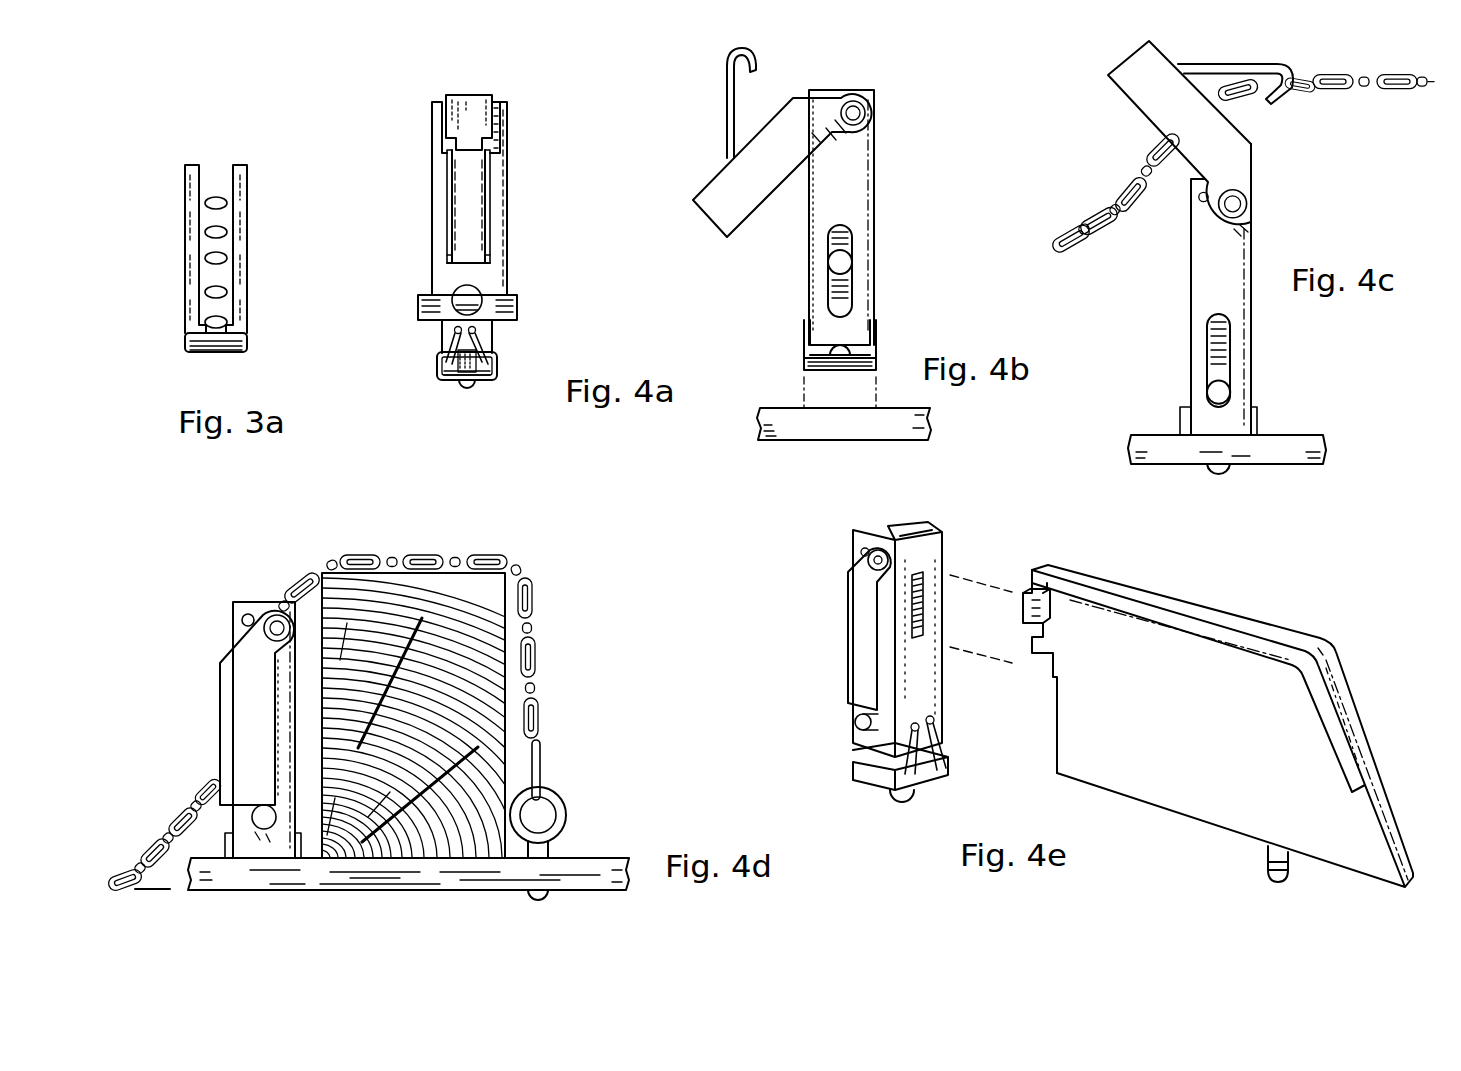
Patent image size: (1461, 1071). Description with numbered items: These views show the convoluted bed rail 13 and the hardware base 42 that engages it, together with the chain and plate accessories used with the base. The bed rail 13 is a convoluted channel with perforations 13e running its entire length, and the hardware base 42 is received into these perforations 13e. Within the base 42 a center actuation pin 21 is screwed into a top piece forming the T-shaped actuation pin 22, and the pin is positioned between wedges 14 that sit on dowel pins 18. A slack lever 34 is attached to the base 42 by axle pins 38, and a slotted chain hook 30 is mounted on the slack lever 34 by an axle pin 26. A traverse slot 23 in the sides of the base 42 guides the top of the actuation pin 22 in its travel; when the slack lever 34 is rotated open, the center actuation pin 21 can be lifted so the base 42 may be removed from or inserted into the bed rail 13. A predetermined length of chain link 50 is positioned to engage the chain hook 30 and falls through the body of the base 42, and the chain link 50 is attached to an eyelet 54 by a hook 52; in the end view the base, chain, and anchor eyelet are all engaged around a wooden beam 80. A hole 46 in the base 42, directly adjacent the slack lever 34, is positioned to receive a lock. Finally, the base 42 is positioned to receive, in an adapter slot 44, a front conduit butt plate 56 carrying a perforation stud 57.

In FIG. 3A, the convoluted bed rail 13 is at (238, 292).
In FIG. 4A, the convoluted bed rail 13 is at (497, 382).
In FIG. 4B, the convoluted bed rail 13 is at (766, 408).
In FIG. 4C, the convoluted bed rail 13 is at (1141, 435).
In FIG. 4D, the convoluted bed rail 13 is at (590, 858).
In FIG. 3A, the perforations 13e is at (213, 260).
In FIG. 4A, the wedges 14 is at (455, 345).
In FIG. 4B, the wedges 14 is at (806, 340).
In FIG. 4A, the dowel pins 18 is at (488, 335).
In FIG. 4A, the center actuation pin 21 is at (462, 390).
In FIG. 4B, the center actuation pin 21 is at (845, 306).
In FIG. 4C, the center actuation pin 21 is at (1213, 474).
In FIG. 4A, the T-shaped actuation pin 22 is at (510, 296).
In FIG. 4B, the T-shaped actuation pin 22 is at (838, 262).
In FIG. 4C, the T-shaped actuation pin 22 is at (1224, 392).
In FIG. 4B, the traverse slot 23 is at (849, 232).
In FIG. 4A, the axle pin 26 is at (448, 256).
In FIG. 4A, the slotted chain hook 30 is at (470, 186).
In FIG. 4B, the slotted chain hook 30 is at (728, 106).
In FIG. 4C, the slotted chain hook 30 is at (1249, 66).
In FIG. 4A, the slack lever 34 is at (432, 168).
In FIG. 4B, the slack lever 34 is at (718, 182).
In FIG. 4C, the slack lever 34 is at (1122, 86).
In FIG. 4D, the slack lever 34 is at (220, 708).
In FIG. 4E, the slack lever 34 is at (869, 629).
In FIG. 4A, the axle pins 38 is at (506, 115).
In FIG. 4A, the hardware base 42 is at (460, 95).
In FIG. 4B, the hardware base 42 is at (862, 98).
In FIG. 4C, the hardware base 42 is at (1193, 271).
In FIG. 4D, the hardware base 42 is at (263, 730).
In FIG. 4E, the hardware base 42 is at (940, 530).
In FIG. 4E, the adapter slot 44 is at (921, 620).
In FIG. 4D, the hole 46 is at (242, 621).
In FIG. 4C, the chain link 50 is at (1329, 88).
In FIG. 4D, the chain link 50 is at (537, 660).
In FIG. 4D, the hook 52 is at (540, 756).
In FIG. 4D, the eyelet 54 is at (566, 800).
In FIG. 4E, the front conduit butt plate 56 is at (1207, 606).
In FIG. 4E, the perforation stud 57 is at (1266, 870).
In FIG. 4D, the log 80 is at (500, 575).